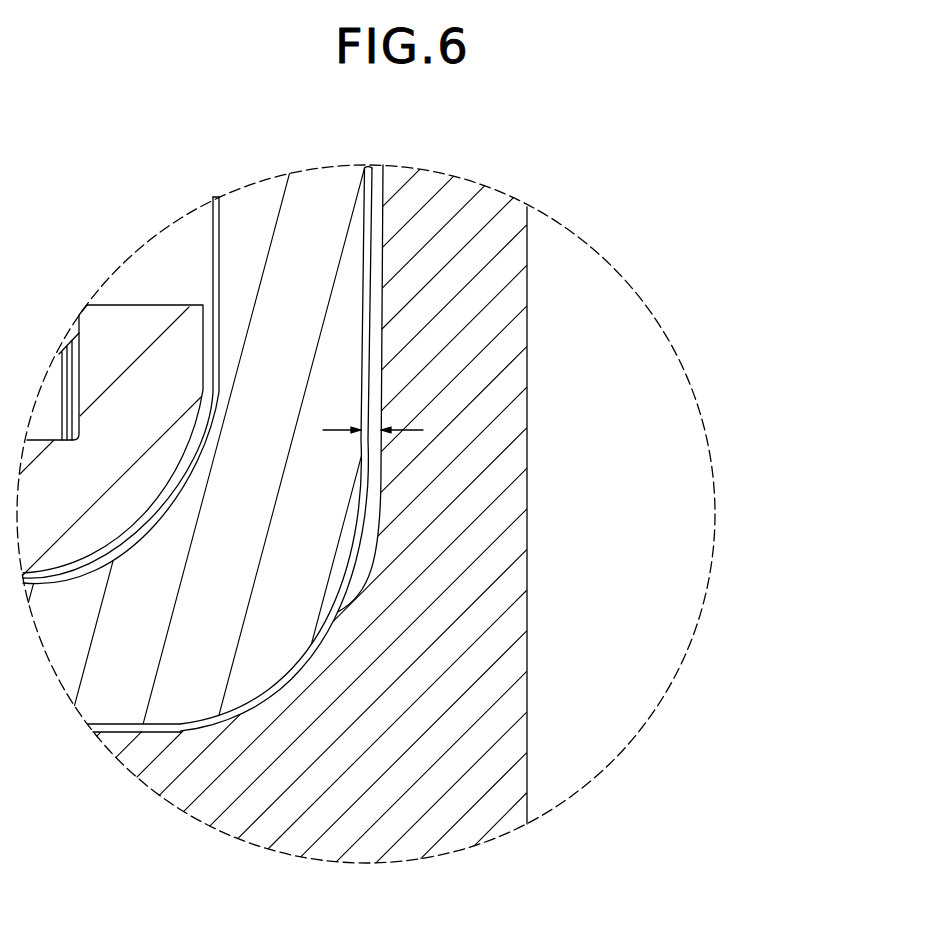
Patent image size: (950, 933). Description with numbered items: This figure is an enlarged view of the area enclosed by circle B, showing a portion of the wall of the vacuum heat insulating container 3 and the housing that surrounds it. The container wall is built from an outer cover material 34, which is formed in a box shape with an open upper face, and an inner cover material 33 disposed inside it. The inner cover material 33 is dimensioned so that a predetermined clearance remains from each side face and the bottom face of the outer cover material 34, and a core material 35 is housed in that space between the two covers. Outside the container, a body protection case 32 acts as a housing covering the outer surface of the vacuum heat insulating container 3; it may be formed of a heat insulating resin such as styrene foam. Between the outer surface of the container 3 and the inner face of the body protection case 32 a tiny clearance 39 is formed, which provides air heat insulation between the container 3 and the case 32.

The vacuum heat insulating container 3 is at (222, 414).
The body protection case 32 is at (510, 497).
The inner cover material 33 is at (218, 237).
The outer cover material 34 is at (367, 188).
The core material 35 is at (310, 190).
The clearance 39 is at (372, 428).
The circle B is at (579, 240).